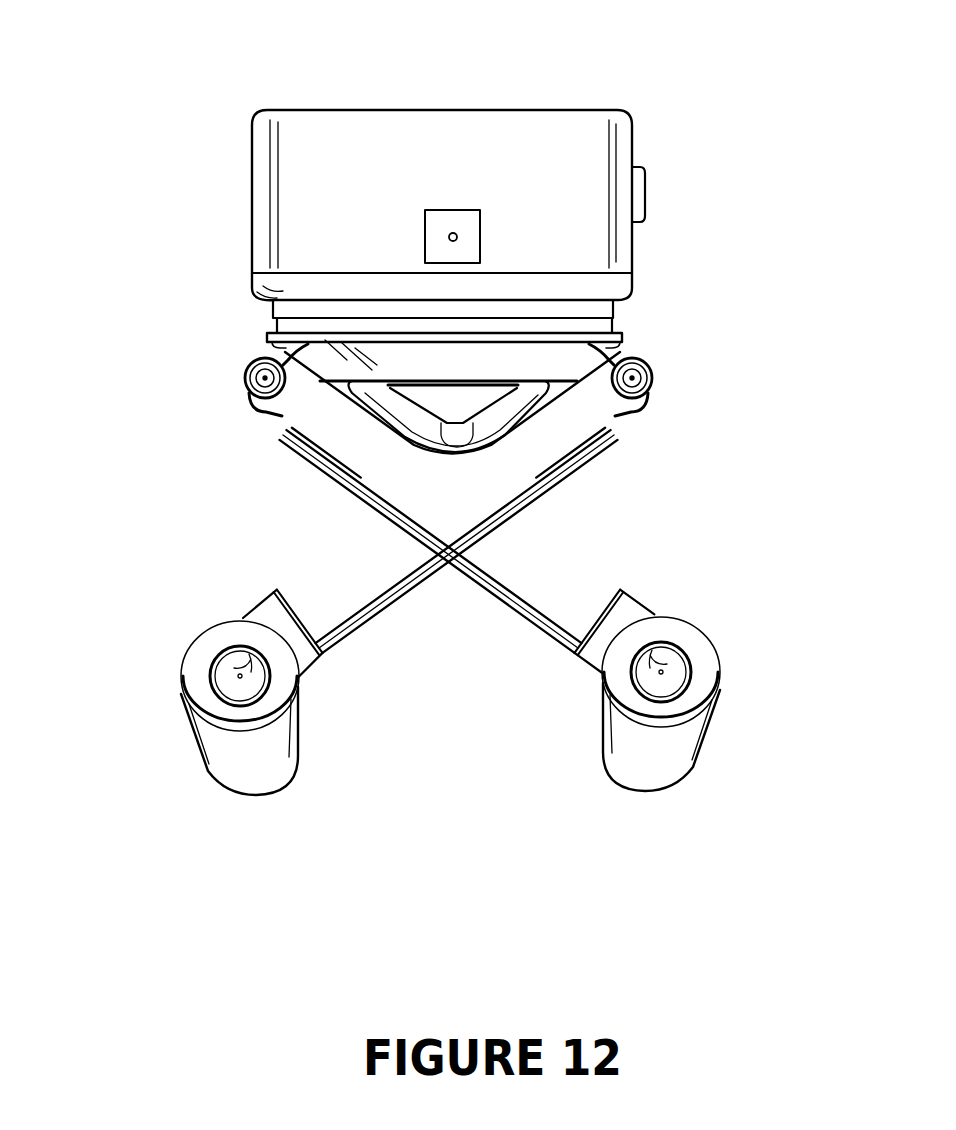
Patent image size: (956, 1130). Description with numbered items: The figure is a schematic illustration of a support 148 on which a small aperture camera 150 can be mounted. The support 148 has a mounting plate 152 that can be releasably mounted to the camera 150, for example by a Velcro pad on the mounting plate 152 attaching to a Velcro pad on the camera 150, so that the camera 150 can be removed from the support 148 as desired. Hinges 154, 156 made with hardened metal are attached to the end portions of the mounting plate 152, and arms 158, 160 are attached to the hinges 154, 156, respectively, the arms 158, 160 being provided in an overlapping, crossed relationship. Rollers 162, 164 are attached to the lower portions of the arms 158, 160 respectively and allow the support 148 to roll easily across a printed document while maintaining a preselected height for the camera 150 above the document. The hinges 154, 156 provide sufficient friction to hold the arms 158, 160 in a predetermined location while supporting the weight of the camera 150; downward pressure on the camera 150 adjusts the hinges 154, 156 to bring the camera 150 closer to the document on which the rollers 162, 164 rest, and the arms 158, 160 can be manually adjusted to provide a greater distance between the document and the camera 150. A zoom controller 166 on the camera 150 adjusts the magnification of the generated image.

The support 148 is at (218, 348).
The camera 150 is at (318, 123).
The mounting plate 152 is at (615, 344).
The hinge 154 is at (243, 373).
The hinge 156 is at (653, 373).
The arm 158 is at (351, 485).
The arm 160 is at (508, 520).
The roller 162 is at (603, 688).
The roller 164 is at (302, 687).
The zoom controller 166 is at (647, 176).